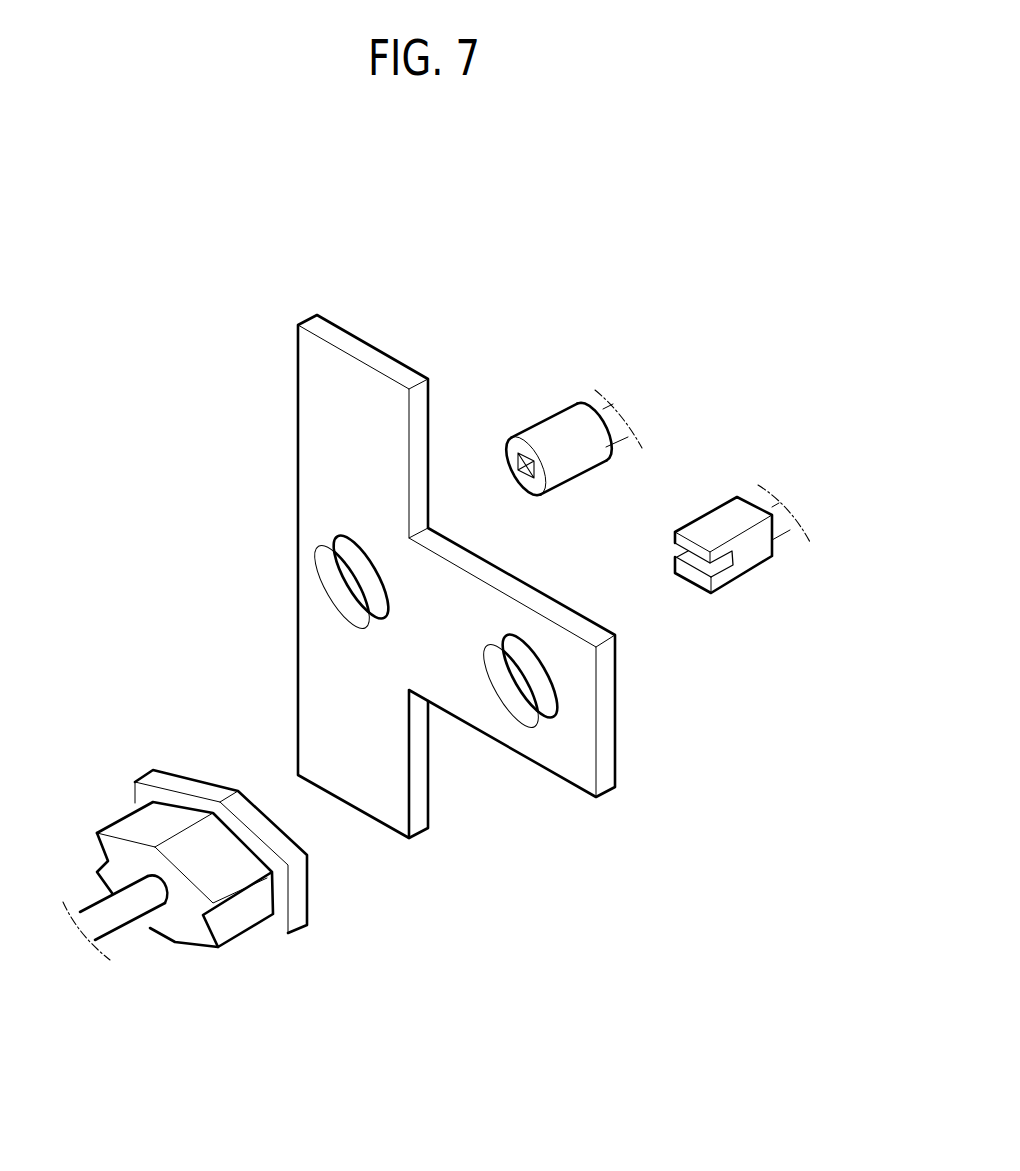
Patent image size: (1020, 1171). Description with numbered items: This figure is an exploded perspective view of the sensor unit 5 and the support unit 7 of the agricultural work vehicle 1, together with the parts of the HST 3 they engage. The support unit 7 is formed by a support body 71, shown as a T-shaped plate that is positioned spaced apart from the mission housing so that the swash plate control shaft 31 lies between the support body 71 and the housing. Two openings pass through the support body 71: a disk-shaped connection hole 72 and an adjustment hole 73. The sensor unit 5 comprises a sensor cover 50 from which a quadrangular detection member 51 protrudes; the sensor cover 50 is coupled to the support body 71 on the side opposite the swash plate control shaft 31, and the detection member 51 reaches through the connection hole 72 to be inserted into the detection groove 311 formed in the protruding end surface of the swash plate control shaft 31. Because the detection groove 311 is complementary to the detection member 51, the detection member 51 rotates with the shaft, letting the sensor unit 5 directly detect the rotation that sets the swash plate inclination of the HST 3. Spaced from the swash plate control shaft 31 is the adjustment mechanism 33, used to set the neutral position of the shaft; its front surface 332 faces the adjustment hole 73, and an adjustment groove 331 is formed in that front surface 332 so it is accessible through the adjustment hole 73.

The agricultural work vehicle 1 is at (84, 298).
The support unit 7 is at (219, 476).
The support body 71 is at (323, 481).
The connection hole 72 is at (541, 675).
The adjustment hole 73 is at (356, 566).
The HST 3 is at (719, 427).
The adjustment mechanism 33 is at (567, 435).
The front surface 332 is at (512, 436).
The adjustment groove 331 is at (523, 480).
The swash plate control shaft 31 is at (727, 527).
The detection groove 311 is at (695, 563).
The sensor unit 5 is at (384, 871).
The detection member 51 is at (298, 838).
The sensor cover 50 is at (232, 930).